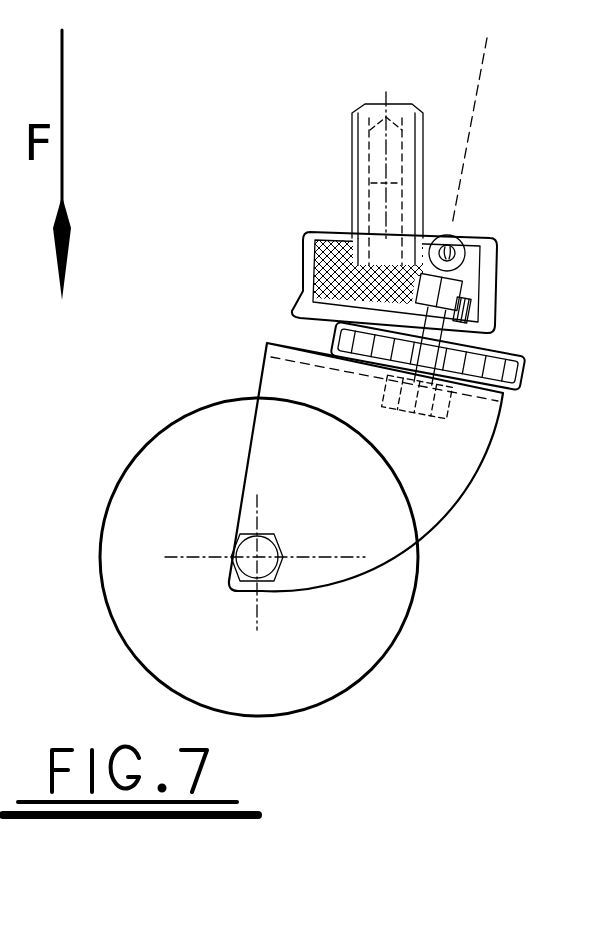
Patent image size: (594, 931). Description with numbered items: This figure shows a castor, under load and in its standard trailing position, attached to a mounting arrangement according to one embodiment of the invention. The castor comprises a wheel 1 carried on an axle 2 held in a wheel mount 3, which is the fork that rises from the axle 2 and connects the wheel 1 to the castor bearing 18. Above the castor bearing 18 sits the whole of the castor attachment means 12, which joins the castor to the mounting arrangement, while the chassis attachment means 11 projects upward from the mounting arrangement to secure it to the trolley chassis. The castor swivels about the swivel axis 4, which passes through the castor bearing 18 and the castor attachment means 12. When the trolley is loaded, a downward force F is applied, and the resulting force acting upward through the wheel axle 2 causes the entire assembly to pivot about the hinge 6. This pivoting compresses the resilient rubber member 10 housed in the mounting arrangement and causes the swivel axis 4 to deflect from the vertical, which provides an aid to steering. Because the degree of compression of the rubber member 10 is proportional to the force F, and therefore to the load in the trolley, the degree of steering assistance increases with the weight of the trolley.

The wheel 1 is at (322, 663).
The axle 2 is at (238, 563).
The wheel mount 3 is at (420, 478).
The swivel axis 4 is at (481, 131).
The hinge 6 is at (468, 264).
The resilient rubber member 10 is at (313, 268).
The chassis attachment means 11 is at (387, 152).
The castor attachment means 12 is at (420, 398).
The castor bearing 18 is at (500, 373).